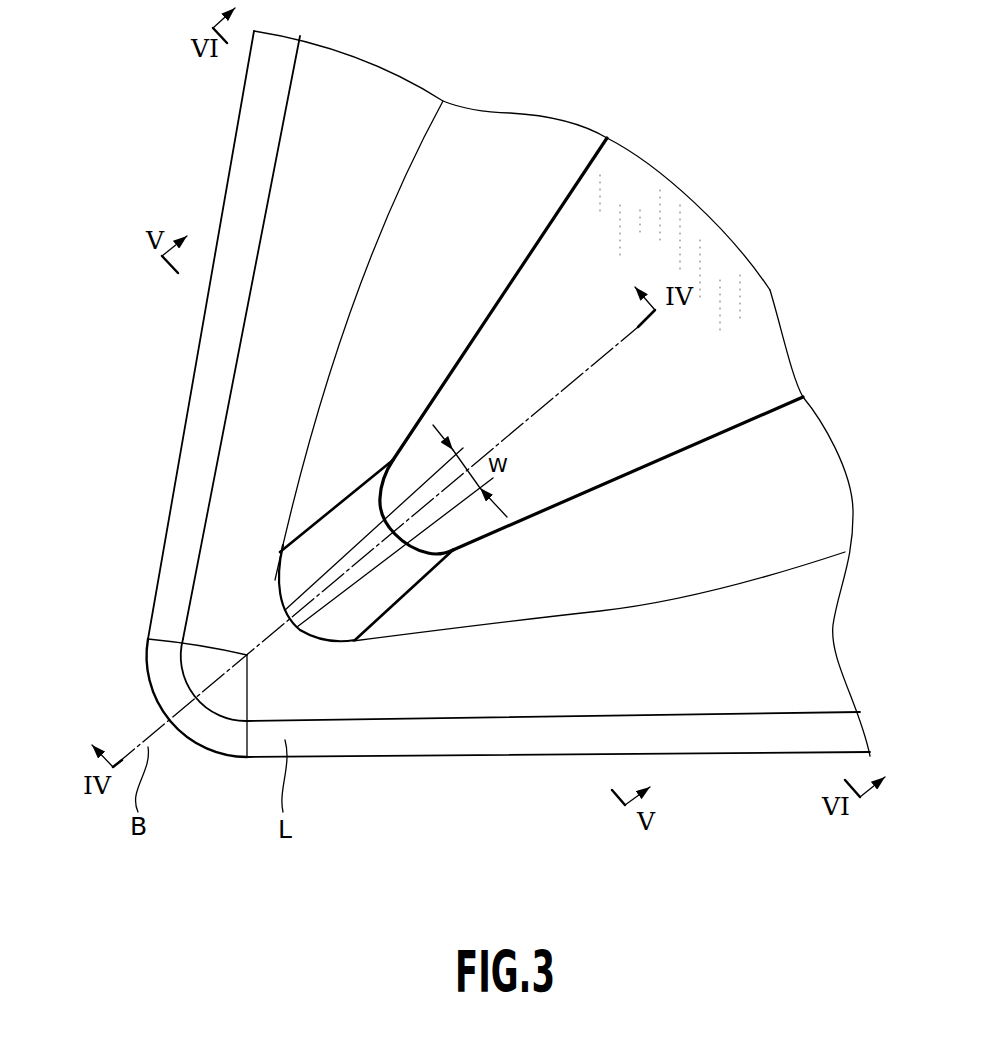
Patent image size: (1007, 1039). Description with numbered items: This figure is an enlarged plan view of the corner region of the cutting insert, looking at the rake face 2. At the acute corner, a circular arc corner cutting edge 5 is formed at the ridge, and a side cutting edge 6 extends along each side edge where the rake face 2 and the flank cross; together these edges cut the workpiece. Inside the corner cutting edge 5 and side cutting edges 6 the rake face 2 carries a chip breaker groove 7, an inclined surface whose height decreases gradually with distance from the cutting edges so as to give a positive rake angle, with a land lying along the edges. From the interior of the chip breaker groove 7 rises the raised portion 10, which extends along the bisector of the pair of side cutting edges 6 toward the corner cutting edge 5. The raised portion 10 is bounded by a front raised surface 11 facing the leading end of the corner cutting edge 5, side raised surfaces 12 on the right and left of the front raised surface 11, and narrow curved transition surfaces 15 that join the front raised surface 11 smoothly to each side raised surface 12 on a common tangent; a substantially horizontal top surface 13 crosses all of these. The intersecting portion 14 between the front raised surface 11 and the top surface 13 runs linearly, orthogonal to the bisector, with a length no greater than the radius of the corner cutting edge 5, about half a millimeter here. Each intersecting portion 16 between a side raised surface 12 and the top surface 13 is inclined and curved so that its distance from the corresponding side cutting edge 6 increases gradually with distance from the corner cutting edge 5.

The rake face 2 is at (675, 425).
The corner cutting edge 5 is at (193, 762).
The side cutting edge 6 is at (183, 437).
The chip breaker groove 7 is at (257, 408).
The raised portion 10 is at (703, 364).
The front raised surface 11 is at (346, 552).
The side raised surface 12 is at (356, 354).
The top surface 13 is at (553, 470).
The intersecting portion 14 is at (406, 488).
The transition surface 15 is at (297, 560).
The intersecting portion 16 is at (478, 328).